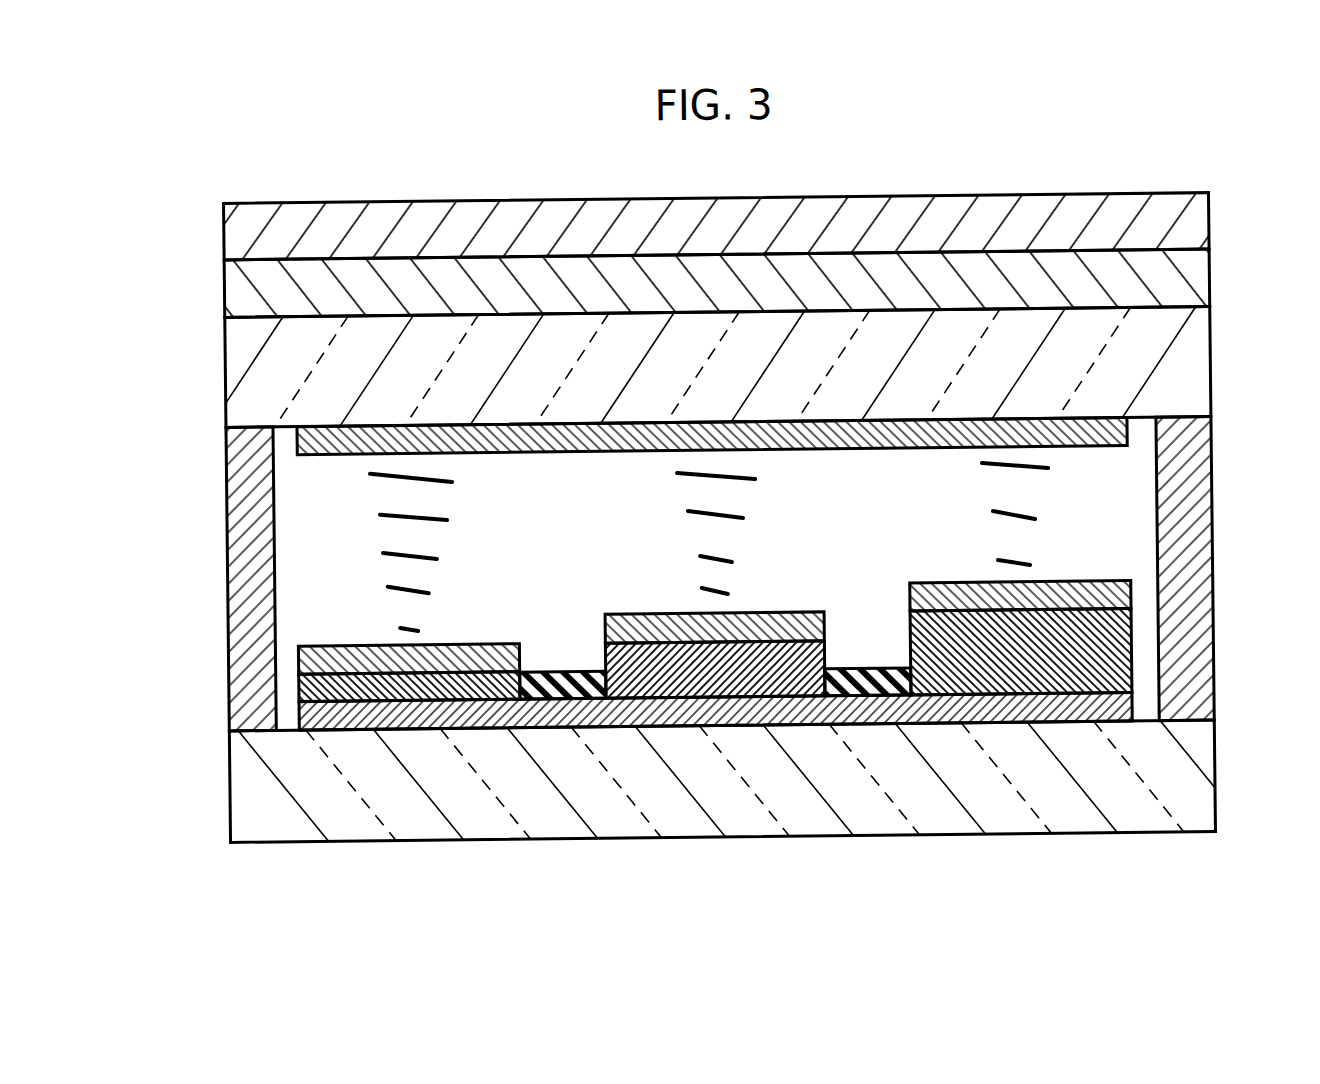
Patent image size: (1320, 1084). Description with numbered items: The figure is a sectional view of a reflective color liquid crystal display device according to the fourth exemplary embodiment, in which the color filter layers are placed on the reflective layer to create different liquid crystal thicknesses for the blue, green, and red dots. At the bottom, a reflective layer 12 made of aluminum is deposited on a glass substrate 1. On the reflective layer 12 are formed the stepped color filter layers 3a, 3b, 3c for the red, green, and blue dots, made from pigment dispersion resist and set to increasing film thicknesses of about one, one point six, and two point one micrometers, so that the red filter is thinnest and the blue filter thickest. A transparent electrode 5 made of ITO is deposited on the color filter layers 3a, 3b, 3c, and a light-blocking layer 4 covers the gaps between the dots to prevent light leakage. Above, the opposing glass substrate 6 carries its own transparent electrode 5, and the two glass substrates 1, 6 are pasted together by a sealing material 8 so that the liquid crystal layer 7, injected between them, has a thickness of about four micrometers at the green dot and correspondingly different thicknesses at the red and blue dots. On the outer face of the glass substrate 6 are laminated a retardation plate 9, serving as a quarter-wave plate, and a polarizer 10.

The glass substrate 1 is at (1175, 802).
The color filter layer 3a is at (417, 690).
The color filter layer 3b is at (666, 692).
The color filter layer 3c is at (976, 651).
The light-blocking layer 4 is at (869, 684).
The transparent electrode 5 is at (1129, 436).
The glass substrate 6 is at (1186, 373).
The liquid crystal layer 7 is at (1113, 528).
The sealing material 8 is at (244, 588).
The retardation plate 9 is at (1190, 288).
The polarizer 10 is at (1196, 231).
The reflective layer 12 is at (1121, 706).